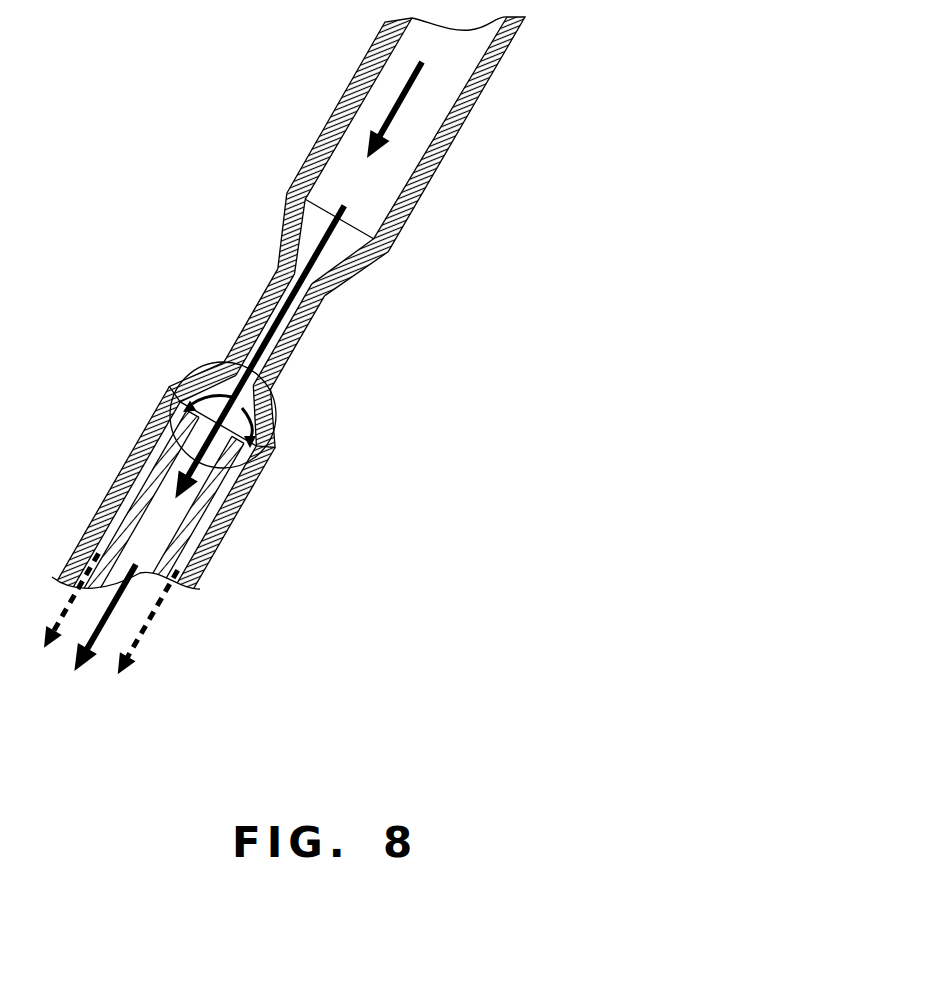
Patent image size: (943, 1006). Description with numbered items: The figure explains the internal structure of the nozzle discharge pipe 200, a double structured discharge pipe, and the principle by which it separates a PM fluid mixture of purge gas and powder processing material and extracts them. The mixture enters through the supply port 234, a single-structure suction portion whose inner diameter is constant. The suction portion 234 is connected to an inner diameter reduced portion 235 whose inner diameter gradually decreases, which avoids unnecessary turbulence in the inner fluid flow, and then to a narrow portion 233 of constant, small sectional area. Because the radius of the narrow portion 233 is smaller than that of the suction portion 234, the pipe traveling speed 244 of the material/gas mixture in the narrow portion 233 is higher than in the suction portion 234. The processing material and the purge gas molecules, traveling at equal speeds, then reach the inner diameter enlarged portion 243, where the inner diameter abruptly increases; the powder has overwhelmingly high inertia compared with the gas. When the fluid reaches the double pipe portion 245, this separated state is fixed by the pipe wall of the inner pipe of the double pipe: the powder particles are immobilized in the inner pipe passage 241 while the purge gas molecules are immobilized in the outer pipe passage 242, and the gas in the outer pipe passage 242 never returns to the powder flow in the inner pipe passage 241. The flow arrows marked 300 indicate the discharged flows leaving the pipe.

The nozzle discharge pipe 200 is at (195, 193).
The narrow portion 233 is at (300, 343).
The supply port 234 is at (450, 158).
The inner diameter reduced portion 235 is at (362, 277).
The inner pipe passage 241 is at (152, 542).
The outer pipe passage 242 is at (140, 512).
The inner diameter enlarged portion 243 is at (277, 418).
The pipe traveling speed 244 is at (462, 58).
The double pipe portion 245 is at (135, 440).
The fluid flow 300 is at (97, 645).